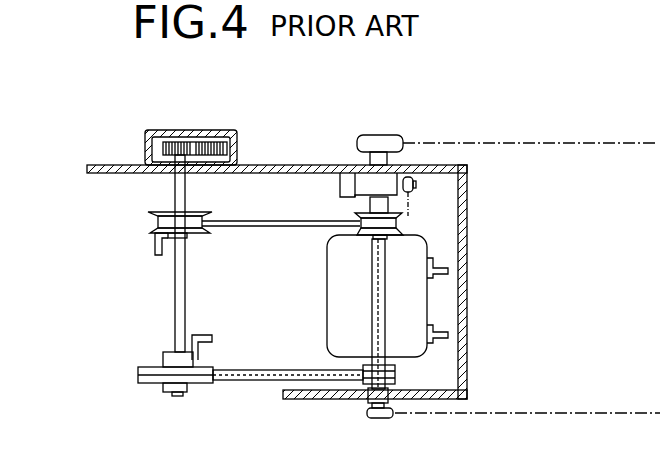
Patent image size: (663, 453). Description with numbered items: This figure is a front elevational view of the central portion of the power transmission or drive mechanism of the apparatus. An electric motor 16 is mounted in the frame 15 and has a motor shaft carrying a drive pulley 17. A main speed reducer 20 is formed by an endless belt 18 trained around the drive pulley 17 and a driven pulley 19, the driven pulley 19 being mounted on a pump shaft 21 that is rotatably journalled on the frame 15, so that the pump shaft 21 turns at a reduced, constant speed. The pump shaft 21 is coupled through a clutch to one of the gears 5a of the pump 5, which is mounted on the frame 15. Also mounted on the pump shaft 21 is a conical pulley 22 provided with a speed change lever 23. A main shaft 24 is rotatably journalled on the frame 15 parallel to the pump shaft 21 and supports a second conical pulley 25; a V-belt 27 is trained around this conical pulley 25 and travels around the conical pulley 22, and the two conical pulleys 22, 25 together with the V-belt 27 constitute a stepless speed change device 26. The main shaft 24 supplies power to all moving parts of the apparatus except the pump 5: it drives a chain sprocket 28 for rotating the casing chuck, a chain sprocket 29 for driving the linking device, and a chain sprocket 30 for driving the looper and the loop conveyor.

The frame 15 is at (102, 164).
The pump 5 is at (160, 130).
The gears 5a is at (180, 142).
The pump shaft 21 is at (175, 193).
The conical pulley 22 is at (200, 233).
The speed change lever 23 is at (155, 247).
The stepless speed change device 26 is at (232, 215).
The V-belt 27 is at (262, 228).
The conical pulley 25 is at (355, 214).
The chain sprocket 28 is at (412, 193).
The chain sprocket 29 is at (363, 137).
The electric motor 16 is at (327, 308).
The main shaft 24 is at (372, 260).
The drive pulley 17 is at (395, 371).
The endless belt 18 is at (232, 381).
The main speed reducer 20 is at (295, 369).
The driven pulley 19 is at (148, 367).
The chain sprocket 30 is at (368, 415).